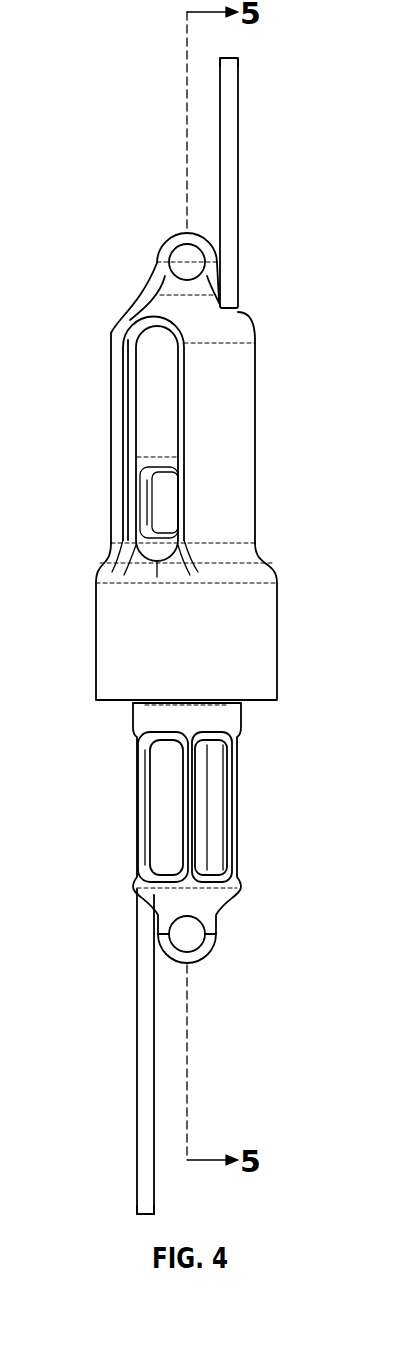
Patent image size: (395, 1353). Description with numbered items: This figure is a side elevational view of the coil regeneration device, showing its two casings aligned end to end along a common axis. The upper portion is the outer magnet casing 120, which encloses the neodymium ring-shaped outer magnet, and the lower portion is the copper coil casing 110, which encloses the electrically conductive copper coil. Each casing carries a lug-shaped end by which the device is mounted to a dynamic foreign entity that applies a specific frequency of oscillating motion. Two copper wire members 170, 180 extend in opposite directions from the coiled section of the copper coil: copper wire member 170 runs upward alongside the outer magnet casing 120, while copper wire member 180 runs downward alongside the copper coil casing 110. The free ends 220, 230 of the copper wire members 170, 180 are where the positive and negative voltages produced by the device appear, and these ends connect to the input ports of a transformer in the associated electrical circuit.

The copper coil casing 110 is at (135, 718).
The outer magnet casing 120 is at (128, 317).
The copper wire member 170 is at (230, 147).
The copper wire member 180 is at (140, 1062).
The end of copper wire member 220 is at (231, 58).
The end of copper wire member 230 is at (141, 1214).